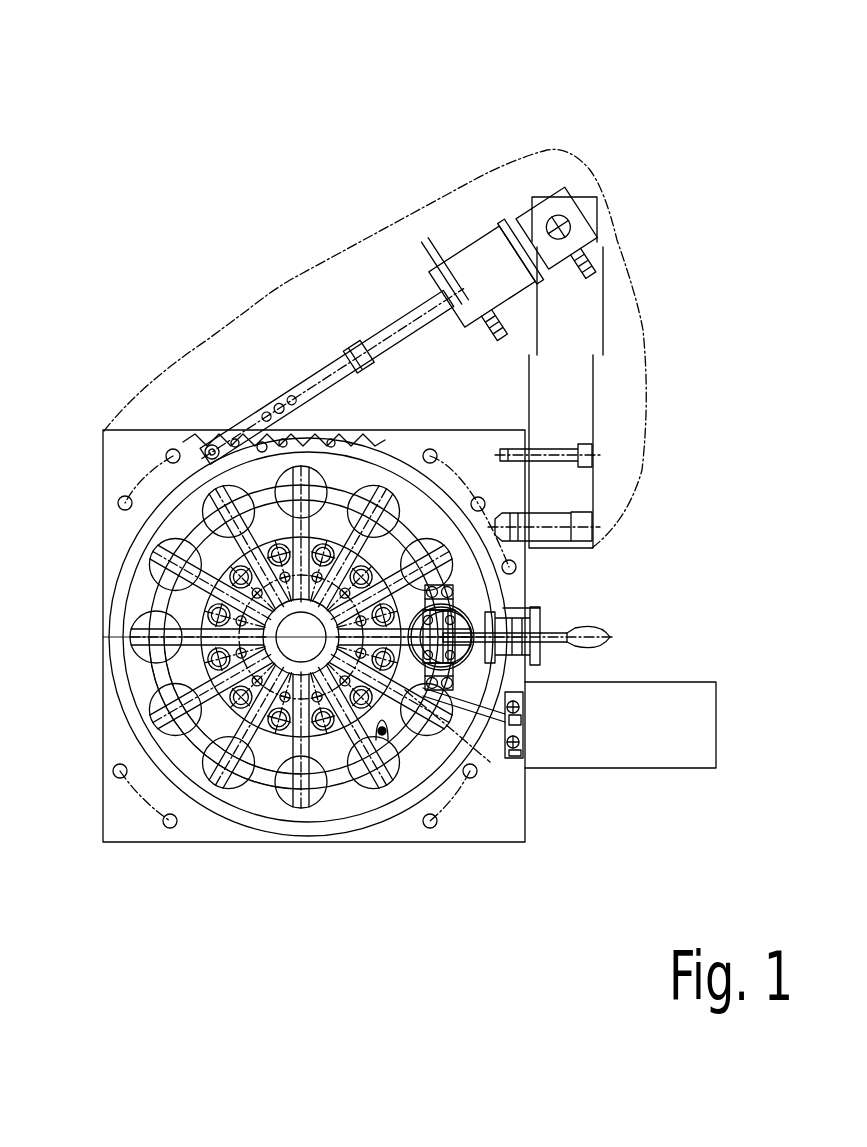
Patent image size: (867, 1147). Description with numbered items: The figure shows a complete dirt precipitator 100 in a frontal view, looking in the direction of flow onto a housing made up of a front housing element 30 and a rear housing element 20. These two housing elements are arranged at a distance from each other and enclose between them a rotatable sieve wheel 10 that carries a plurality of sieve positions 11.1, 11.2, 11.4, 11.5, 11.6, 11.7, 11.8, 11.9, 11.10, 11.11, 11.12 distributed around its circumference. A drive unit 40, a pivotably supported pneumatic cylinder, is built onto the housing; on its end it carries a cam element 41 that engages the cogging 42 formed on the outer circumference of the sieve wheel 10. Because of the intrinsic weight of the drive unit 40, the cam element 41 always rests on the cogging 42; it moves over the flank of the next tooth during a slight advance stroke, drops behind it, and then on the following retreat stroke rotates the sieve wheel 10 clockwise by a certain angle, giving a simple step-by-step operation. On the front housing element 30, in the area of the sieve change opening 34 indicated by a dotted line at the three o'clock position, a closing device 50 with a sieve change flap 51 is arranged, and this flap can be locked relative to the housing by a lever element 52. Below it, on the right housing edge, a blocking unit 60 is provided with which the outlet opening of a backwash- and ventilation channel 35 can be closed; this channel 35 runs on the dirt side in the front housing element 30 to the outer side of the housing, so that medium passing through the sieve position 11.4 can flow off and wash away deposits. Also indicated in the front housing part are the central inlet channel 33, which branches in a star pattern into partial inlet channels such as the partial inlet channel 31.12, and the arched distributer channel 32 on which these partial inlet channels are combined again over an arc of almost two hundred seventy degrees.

The dirt precipitator 100 is at (120, 158).
The sieve wheel 10 is at (137, 581).
The rear housing element 20 is at (375, 348).
The front housing element 30 is at (132, 478).
The partial inlet channel 31.12 is at (292, 438).
The arched distributer channel 32 is at (205, 738).
The central inlet channel 33 is at (268, 768).
The sieve change opening 34 is at (482, 779).
The backwash- and ventilation channel 35 is at (385, 742).
The drive unit 40 is at (447, 286).
The cam element 41 is at (200, 450).
The cogging 42 is at (262, 445).
The closing device 50 is at (512, 608).
The sieve change flap 51 is at (460, 605).
The lever element 52 is at (612, 642).
The blocking unit 60 is at (667, 718).
The sieve position 11.1 is at (373, 490).
The sieve position 11.2 is at (455, 578).
The sieve position 11.4 is at (412, 716).
The sieve position 11.5 is at (363, 786).
The sieve position 11.6 is at (300, 800).
The sieve position 11.7 is at (215, 776).
The sieve position 11.8 is at (152, 715).
The sieve position 11.9 is at (134, 624).
The sieve position 11.10 is at (176, 546).
The sieve position 11.11 is at (210, 500).
The sieve position 11.12 is at (313, 480).